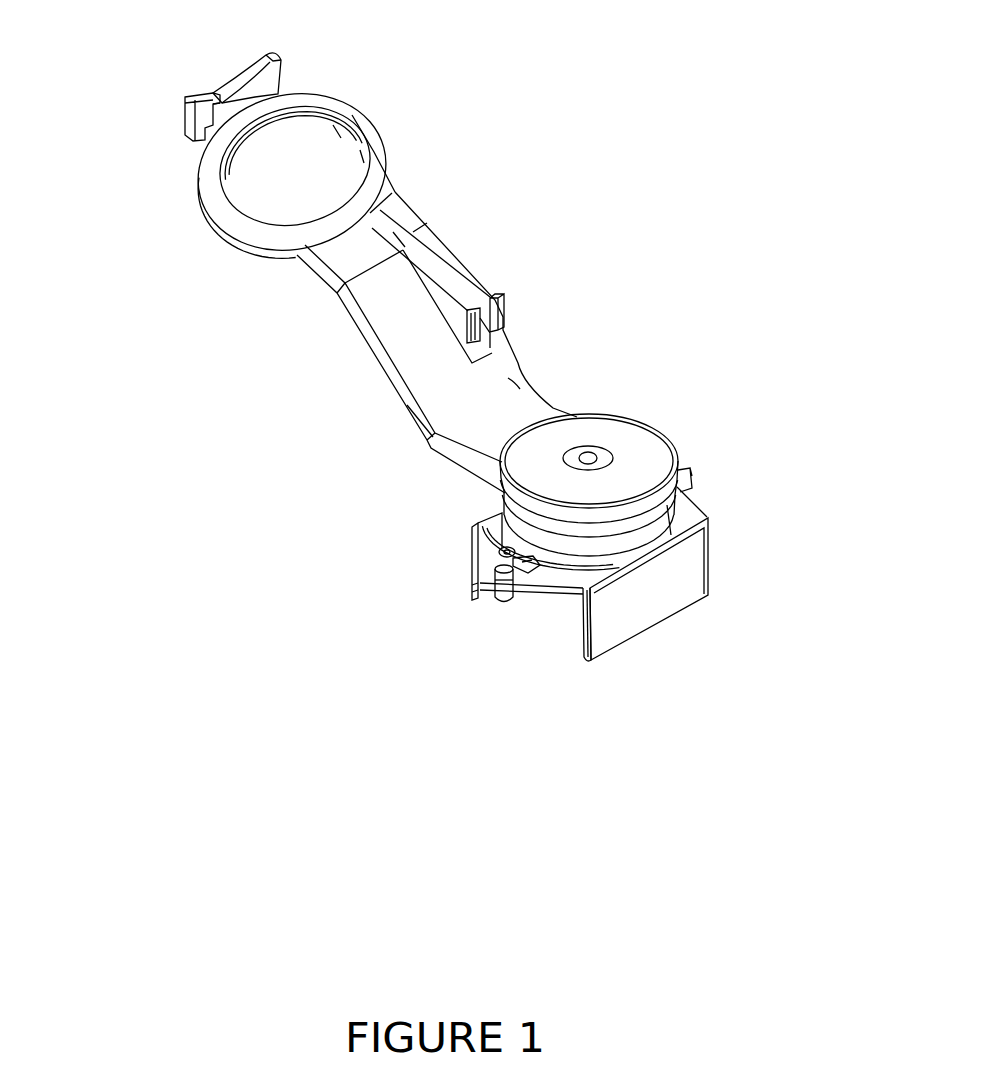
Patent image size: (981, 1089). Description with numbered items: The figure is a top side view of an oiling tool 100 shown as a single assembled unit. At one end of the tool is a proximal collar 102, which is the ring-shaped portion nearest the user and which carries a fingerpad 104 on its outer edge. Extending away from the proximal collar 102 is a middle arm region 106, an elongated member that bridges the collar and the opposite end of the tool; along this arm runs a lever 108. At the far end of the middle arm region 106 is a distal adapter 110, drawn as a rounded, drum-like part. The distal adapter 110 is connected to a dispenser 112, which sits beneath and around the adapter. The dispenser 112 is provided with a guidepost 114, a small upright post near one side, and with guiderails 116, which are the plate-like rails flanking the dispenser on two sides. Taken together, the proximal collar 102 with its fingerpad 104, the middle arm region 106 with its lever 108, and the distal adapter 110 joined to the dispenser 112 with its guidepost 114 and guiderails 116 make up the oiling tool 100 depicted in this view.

The oiling tool 100 is at (590, 70).
The proximal collar 102 is at (193, 210).
The fingerpad 104 is at (142, 91).
The middle arm region 106 is at (362, 381).
The lever 108 is at (490, 263).
The distal adapter 110 is at (657, 420).
The dispenser 112 is at (447, 525).
The guidepost 114 is at (497, 615).
The guiderails 116 is at (457, 582).